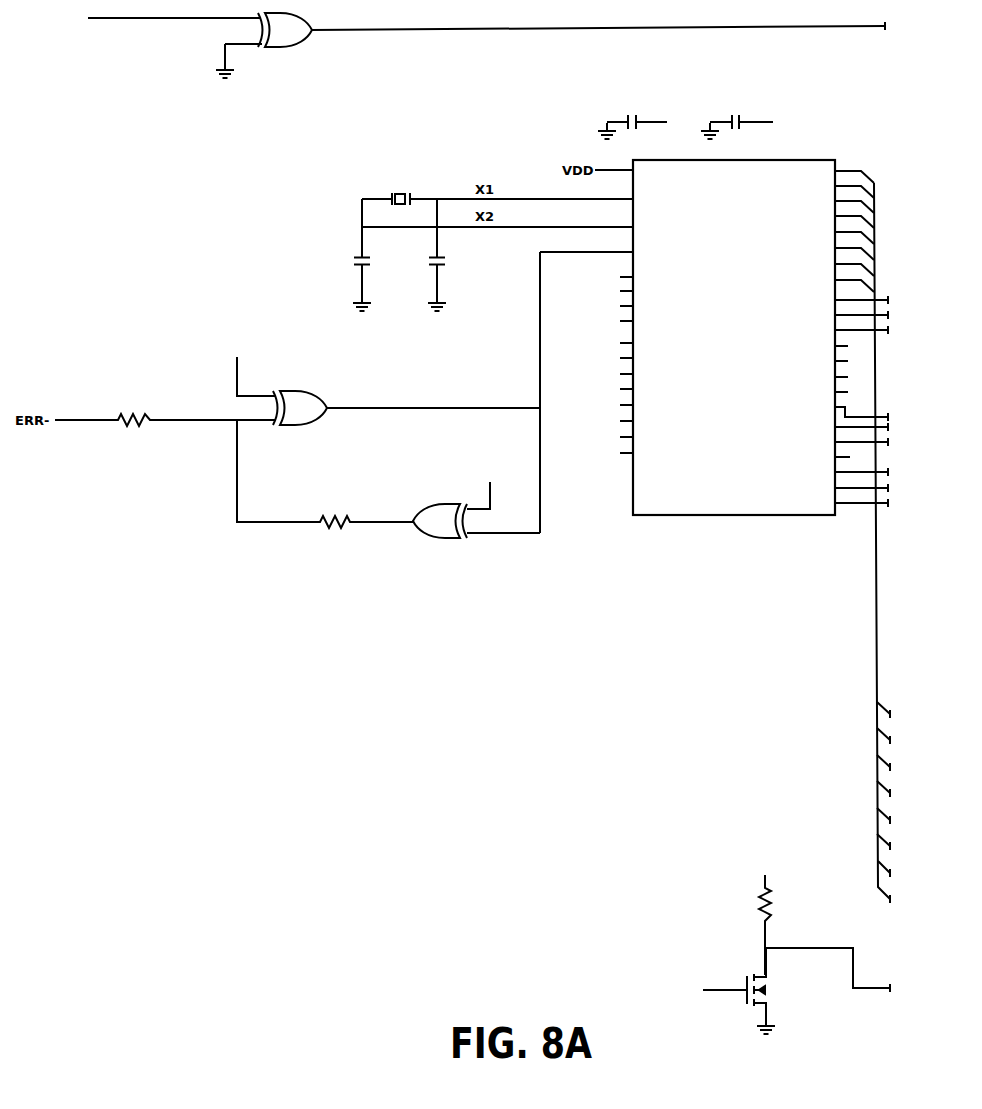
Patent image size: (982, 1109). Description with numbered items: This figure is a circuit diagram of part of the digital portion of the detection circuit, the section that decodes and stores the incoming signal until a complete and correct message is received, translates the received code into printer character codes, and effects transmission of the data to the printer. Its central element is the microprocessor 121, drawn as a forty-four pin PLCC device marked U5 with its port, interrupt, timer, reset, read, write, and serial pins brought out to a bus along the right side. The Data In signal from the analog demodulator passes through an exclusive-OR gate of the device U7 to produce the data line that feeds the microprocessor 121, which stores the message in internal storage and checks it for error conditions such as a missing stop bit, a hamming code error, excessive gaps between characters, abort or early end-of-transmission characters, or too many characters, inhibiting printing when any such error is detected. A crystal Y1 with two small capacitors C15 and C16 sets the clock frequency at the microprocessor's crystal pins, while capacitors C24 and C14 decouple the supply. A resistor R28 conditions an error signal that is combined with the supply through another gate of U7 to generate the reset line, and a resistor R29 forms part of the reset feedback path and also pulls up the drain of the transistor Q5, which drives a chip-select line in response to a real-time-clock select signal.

The microprocessor 121 is at (735, 360).
The microcontroller N87C51FA U5 is at (600, 519).
The 74ACT86 XOR gate U7 is at (460, 297).
The crystal 11.0592 MHz Y1 is at (481, 169).
The capacitor 22pF C15 is at (344, 279).
The capacitor 22pF C16 is at (459, 276).
The capacitor 1.0uF C24 is at (649, 121).
The capacitor 1000pF C14 is at (754, 125).
The resistor 90.9K R28 is at (165, 421).
The resistor R29 is at (521, 697).
The MOSFET VN0300L Q5 is at (763, 991).